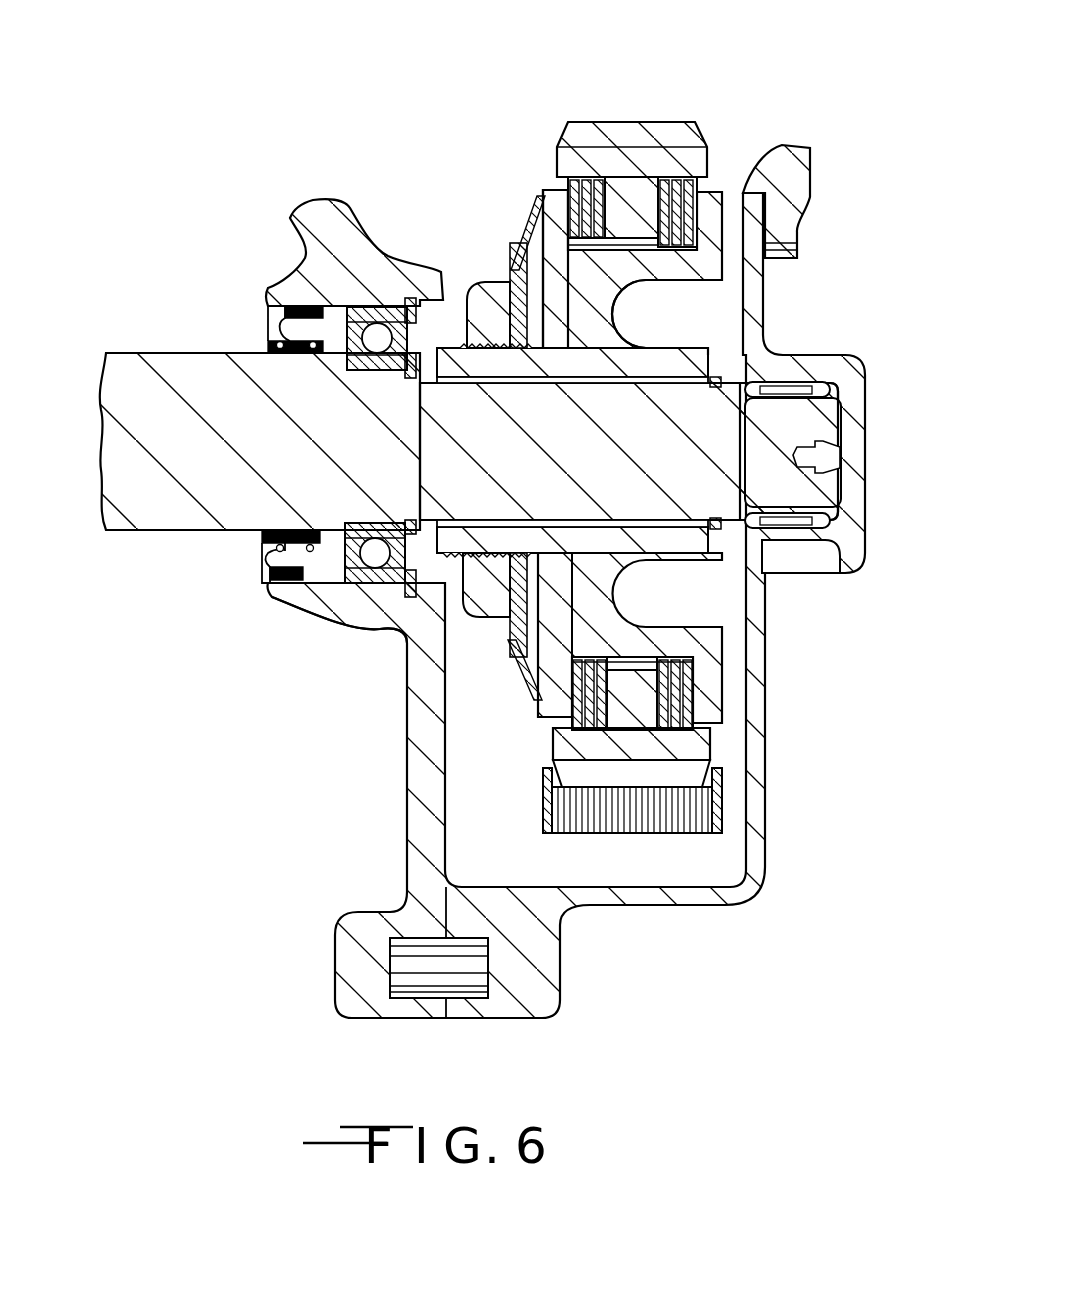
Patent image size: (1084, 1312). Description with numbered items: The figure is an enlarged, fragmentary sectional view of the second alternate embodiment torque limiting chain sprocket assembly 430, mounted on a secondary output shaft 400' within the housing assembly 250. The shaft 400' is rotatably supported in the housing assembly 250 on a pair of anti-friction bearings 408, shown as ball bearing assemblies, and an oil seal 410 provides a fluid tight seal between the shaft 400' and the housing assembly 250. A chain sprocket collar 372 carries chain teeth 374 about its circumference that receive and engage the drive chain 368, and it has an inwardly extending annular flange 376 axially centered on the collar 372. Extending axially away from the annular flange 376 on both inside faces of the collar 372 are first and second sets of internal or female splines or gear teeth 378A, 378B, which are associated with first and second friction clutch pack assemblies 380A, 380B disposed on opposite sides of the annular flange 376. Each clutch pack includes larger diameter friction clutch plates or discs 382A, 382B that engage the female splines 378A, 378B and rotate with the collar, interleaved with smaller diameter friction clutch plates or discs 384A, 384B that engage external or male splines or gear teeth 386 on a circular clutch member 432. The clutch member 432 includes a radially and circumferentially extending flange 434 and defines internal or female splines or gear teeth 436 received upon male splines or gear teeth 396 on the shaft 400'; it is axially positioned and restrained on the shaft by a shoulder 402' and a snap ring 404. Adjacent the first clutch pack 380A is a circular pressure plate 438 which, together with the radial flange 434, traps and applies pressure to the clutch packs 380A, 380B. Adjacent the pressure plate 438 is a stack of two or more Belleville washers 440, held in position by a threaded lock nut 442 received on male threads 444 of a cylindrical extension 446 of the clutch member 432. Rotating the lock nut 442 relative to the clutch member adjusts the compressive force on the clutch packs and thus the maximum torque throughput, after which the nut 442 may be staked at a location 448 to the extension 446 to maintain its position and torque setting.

The housing assembly 250 is at (400, 824).
The drive chain 368 is at (678, 823).
The chain sprocket collar 372 is at (690, 748).
The chain teeth 374 is at (690, 773).
The annular flange 376 is at (695, 692).
The first set of internal splines or gear teeth 378A is at (557, 145).
The second set of internal splines or gear teeth 378B is at (736, 165).
The first friction clutch pack assembly 380A is at (548, 171).
The second friction clutch pack assembly 380B is at (755, 128).
The larger diameter friction clutch plates or discs 382A is at (600, 183).
The larger diameter friction clutch plates or discs 382B is at (672, 183).
The smaller diameter friction clutch plates or discs 384A is at (535, 240).
The smaller diameter friction clutch plates or discs 384B is at (700, 250).
The external splines or gear teeth 386 is at (625, 285).
The external splines or gear teeth 396 is at (722, 379).
The secondary output shaft 400' is at (469, 481).
The shoulder 402' is at (354, 398).
The snap ring 404 is at (752, 615).
The anti-friction bearings 408 is at (368, 575).
The oil seal 410 is at (268, 318).
The torque limiting chain sprocket assembly 430 is at (665, 183).
The circular clutch member 432 is at (650, 537).
The radially and circumferentially extending flange 434 is at (713, 207).
The internal splines or gear teeth 436 is at (582, 367).
The circular pressure plate 438 is at (548, 198).
The Belleville washers 440 is at (522, 655).
The threaded lock nut 442 is at (500, 575).
The male threads 444 is at (438, 600).
The cylindrical extension 446 is at (500, 548).
The staking location 448 is at (463, 335).